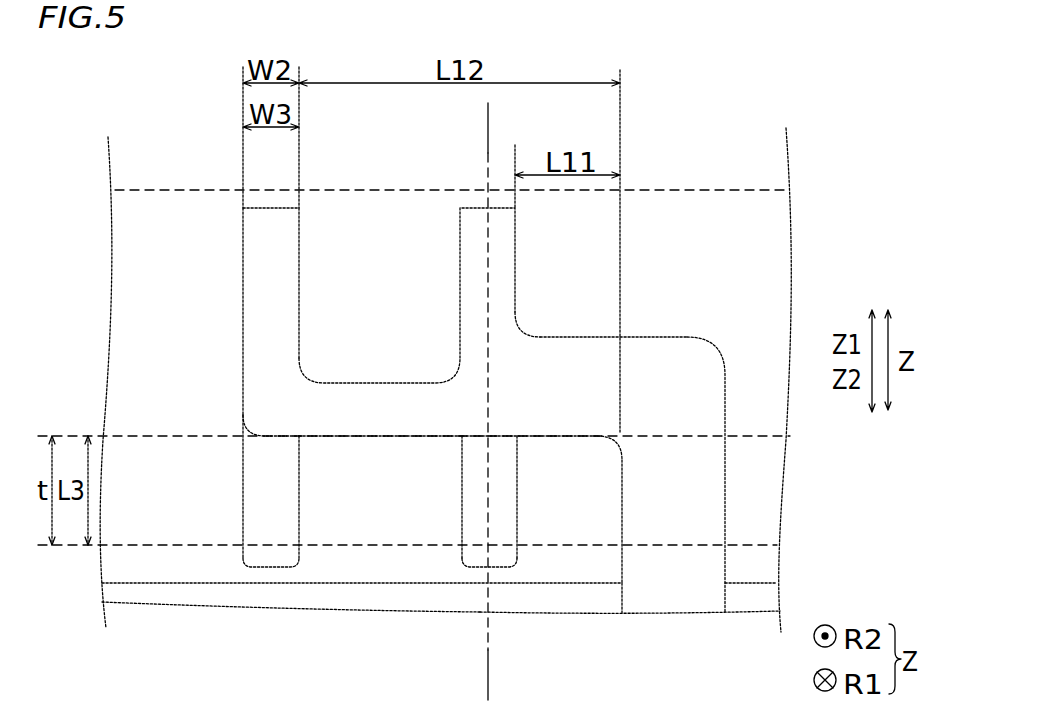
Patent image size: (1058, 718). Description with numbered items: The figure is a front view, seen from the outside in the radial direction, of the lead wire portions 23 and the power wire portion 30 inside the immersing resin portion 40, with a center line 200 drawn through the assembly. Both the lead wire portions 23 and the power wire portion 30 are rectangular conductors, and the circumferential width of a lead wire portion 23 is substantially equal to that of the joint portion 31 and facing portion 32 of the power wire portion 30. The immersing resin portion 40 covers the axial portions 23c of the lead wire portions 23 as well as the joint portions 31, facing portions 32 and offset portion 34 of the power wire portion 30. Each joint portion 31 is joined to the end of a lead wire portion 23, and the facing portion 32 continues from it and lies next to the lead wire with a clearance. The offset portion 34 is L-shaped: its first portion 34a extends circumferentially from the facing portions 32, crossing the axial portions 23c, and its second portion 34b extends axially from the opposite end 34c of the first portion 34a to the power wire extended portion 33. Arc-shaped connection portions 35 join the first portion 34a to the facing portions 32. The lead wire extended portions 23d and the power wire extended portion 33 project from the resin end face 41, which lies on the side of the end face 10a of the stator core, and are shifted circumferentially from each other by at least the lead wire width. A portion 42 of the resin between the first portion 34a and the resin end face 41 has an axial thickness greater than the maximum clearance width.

The end face 10a is at (195, 582).
The lead wire portion 23 is at (238, 462).
The axial portion 23c is at (275, 458).
The lead wire extended portion 23d is at (278, 553).
The power wire portion 30 is at (237, 373).
The joint portion 31 is at (257, 257).
The facing portion 32 is at (282, 350).
The power wire extended portion 33 is at (688, 565).
The offset portion 34 is at (728, 343).
The first portion 34a is at (393, 402).
The second portion 34b is at (675, 485).
The end of first portion 34c is at (667, 399).
The connection portion 35 is at (312, 372).
The immersing resin portion 40 is at (700, 187).
The resin end face 41 is at (113, 553).
The resin portion between first portion and resin end face 42 is at (378, 497).
The center line 200 is at (500, 125).